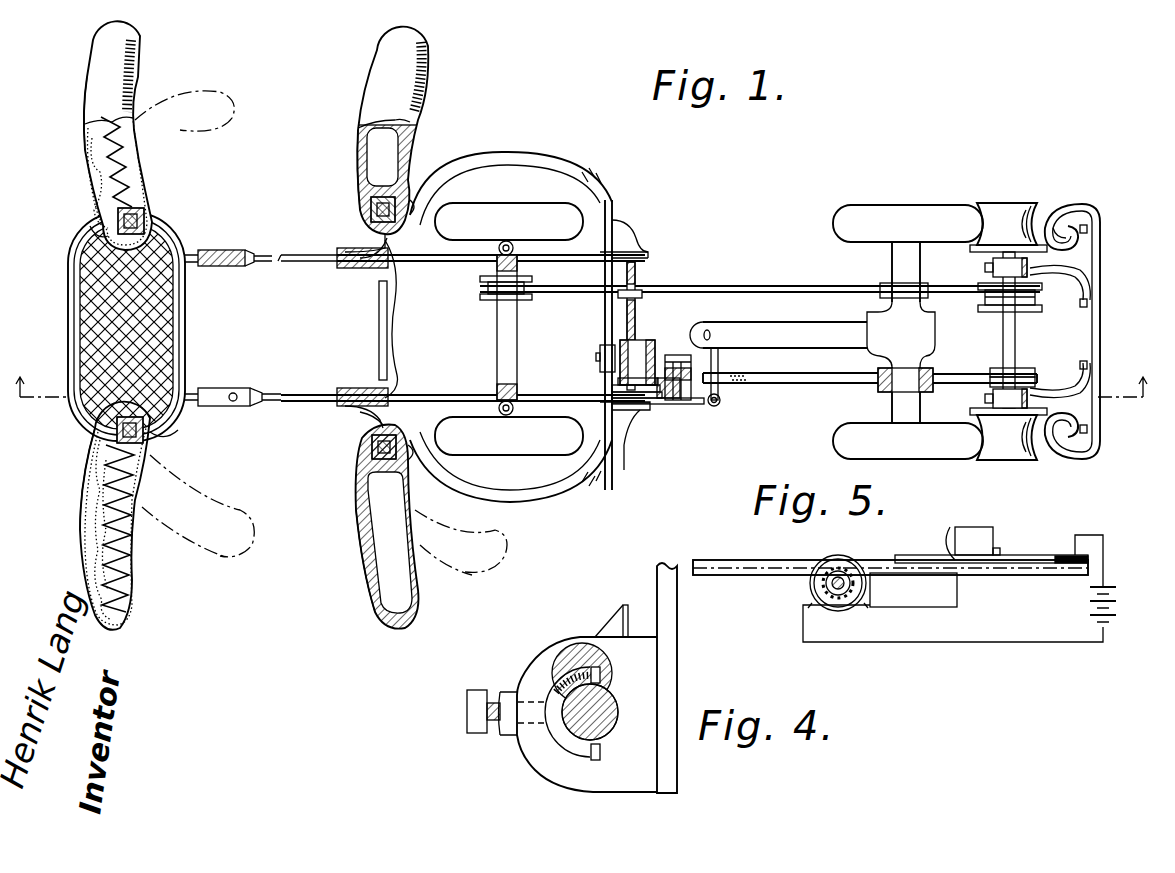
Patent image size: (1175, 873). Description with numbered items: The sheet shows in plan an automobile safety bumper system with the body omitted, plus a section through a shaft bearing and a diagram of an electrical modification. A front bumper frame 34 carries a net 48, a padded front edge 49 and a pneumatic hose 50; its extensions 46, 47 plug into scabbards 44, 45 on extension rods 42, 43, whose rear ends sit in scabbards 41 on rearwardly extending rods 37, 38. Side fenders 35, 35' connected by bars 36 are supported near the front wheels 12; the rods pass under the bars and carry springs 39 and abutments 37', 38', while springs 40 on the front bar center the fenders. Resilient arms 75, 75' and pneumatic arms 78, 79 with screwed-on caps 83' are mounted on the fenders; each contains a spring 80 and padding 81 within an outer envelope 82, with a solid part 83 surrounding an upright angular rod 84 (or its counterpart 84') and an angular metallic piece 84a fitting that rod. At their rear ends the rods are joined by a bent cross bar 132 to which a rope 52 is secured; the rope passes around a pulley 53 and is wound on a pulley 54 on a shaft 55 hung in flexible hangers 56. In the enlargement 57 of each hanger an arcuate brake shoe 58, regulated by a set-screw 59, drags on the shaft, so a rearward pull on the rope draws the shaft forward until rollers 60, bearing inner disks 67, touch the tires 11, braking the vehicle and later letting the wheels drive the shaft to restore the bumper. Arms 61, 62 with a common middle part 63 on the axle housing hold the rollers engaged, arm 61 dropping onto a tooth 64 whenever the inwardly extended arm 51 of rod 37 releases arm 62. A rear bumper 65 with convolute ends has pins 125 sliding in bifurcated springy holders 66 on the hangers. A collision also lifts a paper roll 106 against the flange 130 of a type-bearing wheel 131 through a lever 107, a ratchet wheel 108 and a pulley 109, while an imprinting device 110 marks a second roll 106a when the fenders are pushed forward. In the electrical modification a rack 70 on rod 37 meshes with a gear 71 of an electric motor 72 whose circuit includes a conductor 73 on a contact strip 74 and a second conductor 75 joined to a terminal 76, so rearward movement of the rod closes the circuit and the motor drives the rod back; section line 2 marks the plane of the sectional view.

In FIG. 1, the section line 2- 2 is at (584, 401).
In FIG. 1, the tires 11 is at (942, 207).
In FIG. 1, the front wheels 12 is at (496, 212).
In FIG. 1, the front bumper frame 34 is at (168, 427).
In FIG. 1, the side fender 35 is at (511, 171).
In FIG. 1, the side fender 35' is at (511, 479).
In FIG. 1, the bars 36 is at (388, 313).
In FIG. 1, the rearwardly extending rod 37 is at (463, 378).
In FIG. 5, the rearwardly extending rod 37 is at (890, 554).
In FIG. 1, the abutment 37' is at (603, 406).
In FIG. 1, the rearwardly extending rod 38 is at (491, 278).
In FIG. 1, the abutment 38' is at (600, 268).
In FIG. 1, the springs 39 is at (620, 236).
In FIG. 1, the springs 40 is at (360, 248).
In FIG. 1, the scabbards 41 is at (355, 268).
In FIG. 1, the extension rod 42 is at (275, 393).
In FIG. 1, the extension rod 43 is at (300, 266).
In FIG. 1, the scabbard 44 is at (227, 390).
In FIG. 1, the scabbard 45 is at (213, 249).
In FIG. 1, the bumper frame extension 46 is at (192, 390).
In FIG. 1, the bumper frame extension 47 is at (194, 264).
In FIG. 1, the net covering 48 is at (80, 305).
In FIG. 1, the front edge 49 is at (74, 360).
In FIG. 1, the pneumatic hose 50 is at (70, 276).
In FIG. 1, the inwardly extended arm 51 is at (730, 369).
In FIG. 1, the rope 52 is at (845, 281).
In FIG. 1, the pulley 53 is at (486, 302).
In FIG. 1, the pulley 54 is at (1038, 312).
In FIG. 1, the shaft 55 is at (1003, 350).
In FIG. 4, the shaft 55 is at (614, 712).
In FIG. 1, the flexible hangers 56 is at (1032, 275).
In FIG. 4, the flexible hangers 56 is at (678, 620).
In FIG. 1, the enlargement 57 is at (992, 387).
In FIG. 4, the enlargement 57 is at (640, 762).
In FIG. 4, the arcuate brake shoe 58 is at (553, 680).
In FIG. 4, the set-screw 59 is at (467, 710).
In FIG. 1, the rollers 60 is at (1002, 208).
In FIG. 1, the arm 61 is at (966, 380).
In FIG. 1, the arm 62 is at (798, 378).
In FIG. 1, the common middle part 63 is at (883, 391).
In FIG. 1, the tooth 64 is at (1012, 371).
In FIG. 4, the tooth 64 is at (607, 622).
In FIG. 1, the rear bumper 65 is at (1102, 323).
In FIG. 1, the springy holders 66 is at (1092, 270).
In FIG. 1, the disk-like parts 67 is at (982, 252).
In FIG. 5, the rack 70 is at (893, 575).
In FIG. 5, the gear 71 is at (826, 585).
In FIG. 5, the electric motor 72 is at (860, 578).
In FIG. 5, the conductor 73 is at (1104, 552).
In FIG. 5, the contact strip 74 is at (1040, 556).
In FIG. 1, the resilient arm 75 is at (129, 135).
In FIG. 5, the resilient arm 75 is at (953, 618).
In FIG. 1, the resilient arm 75' is at (134, 516).
In FIG. 5, the terminal 76 is at (1000, 548).
In FIG. 1, the pneumatic arm 78 is at (428, 55).
In FIG. 1, the pneumatic arm 79 is at (420, 595).
In FIG. 1, the spring 80 is at (128, 152).
In FIG. 1, the padding material 81 is at (90, 181).
In FIG. 1, the outer envelope 82 is at (92, 79).
In FIG. 1, the solid part 83 is at (356, 459).
In FIG. 1, the screwed-on caps 83' is at (443, 337).
In FIG. 1, the upright rod 84 is at (273, 324).
In FIG. 1, the block 84' is at (89, 435).
In FIG. 1, the angular metallic piece 84a is at (368, 205).
In FIG. 1, the paper roll 106 is at (652, 348).
In FIG. 1, the paper strip 106a is at (608, 343).
In FIG. 1, the lever 107 is at (622, 378).
In FIG. 1, the ratchet wheel 108 is at (620, 389).
In FIG. 1, the pulley 109 is at (666, 405).
In FIG. 1, the imprinting device 110 is at (600, 355).
In FIG. 1, the pins 125 is at (1090, 232).
In FIG. 1, the flange 130 is at (690, 360).
In FIG. 1, the wheel 131 is at (712, 405).
In FIG. 1, the bent cross bar 132 is at (637, 268).